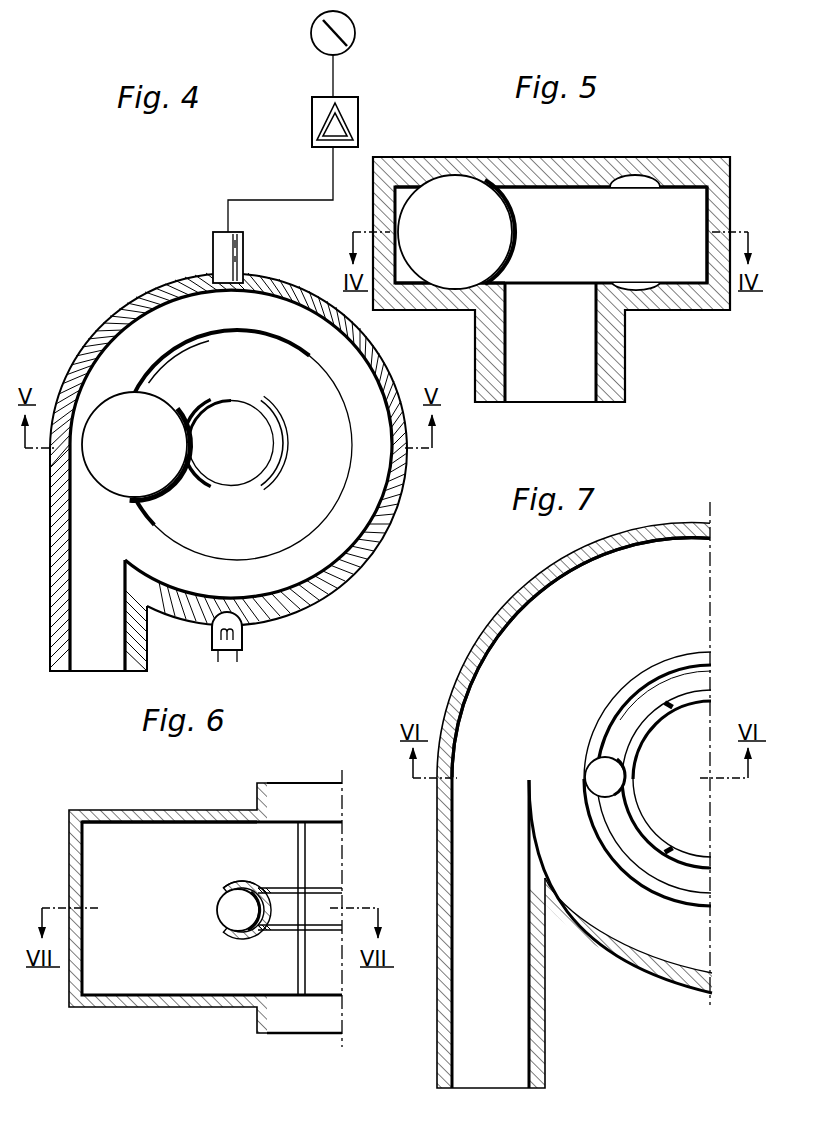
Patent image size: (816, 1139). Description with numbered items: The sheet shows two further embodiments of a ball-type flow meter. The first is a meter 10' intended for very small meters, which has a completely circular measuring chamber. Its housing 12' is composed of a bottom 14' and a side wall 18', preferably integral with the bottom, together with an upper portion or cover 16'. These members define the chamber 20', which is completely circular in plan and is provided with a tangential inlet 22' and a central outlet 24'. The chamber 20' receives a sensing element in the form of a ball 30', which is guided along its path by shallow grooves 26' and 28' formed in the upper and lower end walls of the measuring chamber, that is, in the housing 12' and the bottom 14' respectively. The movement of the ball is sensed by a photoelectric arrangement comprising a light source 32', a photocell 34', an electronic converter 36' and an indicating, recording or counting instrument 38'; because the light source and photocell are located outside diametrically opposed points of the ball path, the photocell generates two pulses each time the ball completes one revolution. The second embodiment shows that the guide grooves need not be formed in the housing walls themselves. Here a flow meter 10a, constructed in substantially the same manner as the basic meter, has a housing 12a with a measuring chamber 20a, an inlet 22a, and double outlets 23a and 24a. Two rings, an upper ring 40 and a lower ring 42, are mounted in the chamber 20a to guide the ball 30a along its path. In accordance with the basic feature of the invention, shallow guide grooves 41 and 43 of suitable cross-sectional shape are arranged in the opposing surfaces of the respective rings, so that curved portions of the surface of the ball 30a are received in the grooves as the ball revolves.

In FIG. 4, the flow meter 10' is at (228, 441).
In FIG. 5, the flow meter 10' is at (551, 253).
In FIG. 5, the housing 12' is at (481, 157).
In FIG. 5, the bottom 14' is at (450, 319).
In FIG. 5, the upper portion or cover 16' is at (613, 157).
In FIG. 5, the side wall 18' is at (736, 205).
In FIG. 4, the chamber 20' is at (203, 428).
In FIG. 5, the chamber 20' is at (551, 235).
In FIG. 4, the tangential inlet 22' is at (118, 570).
In FIG. 4, the central outlet 24' is at (235, 442).
In FIG. 5, the central outlet 24' is at (595, 342).
In FIG. 5, the shallow groove 26' is at (648, 157).
In FIG. 5, the shallow groove 28' is at (666, 313).
In FIG. 4, the ball 30' is at (102, 459).
In FIG. 5, the ball 30' is at (456, 208).
In FIG. 4, the light source 32' is at (252, 644).
In FIG. 4, the photocell 34' is at (273, 215).
In FIG. 4, the electronic converter 36' is at (310, 101).
In FIG. 4, the indicating, recording or counting instrument 38' is at (308, 33).
In FIG. 7, the flow meter 10a is at (500, 601).
In FIG. 6, the flow meter 10a is at (120, 798).
In FIG. 6, the housing 12a is at (190, 810).
In FIG. 7, the measuring chamber 20a is at (627, 637).
In FIG. 6, the measuring chamber 20a is at (179, 876).
In FIG. 7, the inlet 22a is at (478, 972).
In FIG. 6, the outlet 23a is at (312, 783).
In FIG. 7, the outlet 24a is at (702, 774).
In FIG. 6, the outlet 24a is at (305, 1020).
In FIG. 7, the ball 30a is at (622, 783).
In FIG. 6, the ball 30a is at (230, 906).
In FIG. 6, the upper ring 40 is at (283, 888).
In FIG. 6, the shallow guide groove 41 is at (222, 904).
In FIG. 7, the lower ring 42 is at (662, 724).
In FIG. 6, the lower ring 42 is at (288, 931).
In FIG. 7, the shallow guide groove 43 is at (637, 711).
In FIG. 6, the shallow guide groove 43 is at (223, 934).